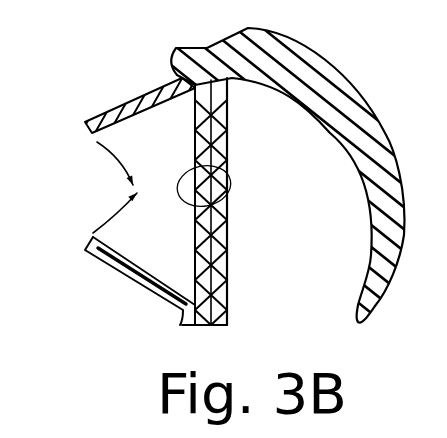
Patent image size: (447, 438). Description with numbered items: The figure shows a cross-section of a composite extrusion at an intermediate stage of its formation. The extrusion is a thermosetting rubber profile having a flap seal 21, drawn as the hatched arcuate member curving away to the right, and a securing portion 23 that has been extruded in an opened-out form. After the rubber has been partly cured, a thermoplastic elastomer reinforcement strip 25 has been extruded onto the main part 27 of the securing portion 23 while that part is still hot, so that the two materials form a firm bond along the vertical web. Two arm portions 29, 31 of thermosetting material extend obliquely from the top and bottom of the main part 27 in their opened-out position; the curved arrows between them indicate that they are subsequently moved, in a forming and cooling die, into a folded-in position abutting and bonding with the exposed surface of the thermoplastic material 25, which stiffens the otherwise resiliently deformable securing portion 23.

The flap seal 21 is at (347, 125).
The securing portion 23 is at (233, 243).
The thermoplastic elastomer reinforcement strip 25 is at (232, 192).
The main part 27 is at (225, 135).
The arm portion 29 is at (120, 107).
The arm portion 31 is at (132, 268).